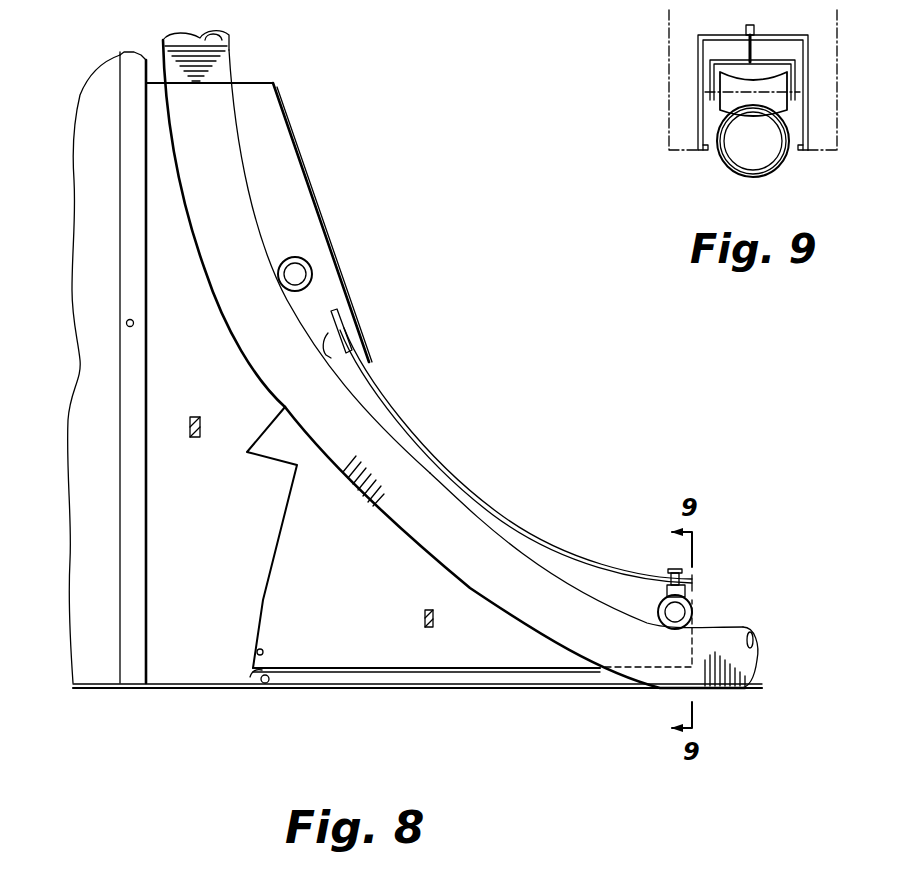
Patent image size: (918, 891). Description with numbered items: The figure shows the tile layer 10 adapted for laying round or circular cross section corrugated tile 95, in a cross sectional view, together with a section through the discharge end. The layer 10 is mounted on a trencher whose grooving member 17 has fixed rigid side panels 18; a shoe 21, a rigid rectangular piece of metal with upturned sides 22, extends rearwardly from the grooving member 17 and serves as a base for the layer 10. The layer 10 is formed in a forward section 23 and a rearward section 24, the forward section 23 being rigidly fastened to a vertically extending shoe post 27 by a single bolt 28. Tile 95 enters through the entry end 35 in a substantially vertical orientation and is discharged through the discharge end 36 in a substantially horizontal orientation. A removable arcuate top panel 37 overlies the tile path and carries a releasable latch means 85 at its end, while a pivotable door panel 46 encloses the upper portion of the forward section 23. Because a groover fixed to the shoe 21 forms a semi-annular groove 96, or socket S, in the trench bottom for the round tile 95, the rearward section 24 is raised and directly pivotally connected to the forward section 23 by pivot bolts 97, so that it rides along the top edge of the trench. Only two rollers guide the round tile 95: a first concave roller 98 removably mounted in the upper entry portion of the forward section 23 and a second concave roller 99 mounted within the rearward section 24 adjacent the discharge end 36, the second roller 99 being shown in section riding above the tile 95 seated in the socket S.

In FIG. 8, the tile layer 10 is at (452, 326).
In FIG. 8, the grooving member 17 is at (83, 152).
In FIG. 8, the side panels 18 is at (82, 373).
In FIG. 8, the shoe 21 is at (82, 692).
In FIG. 8, the upturned sides 22 is at (240, 681).
In FIG. 8, the forward section 23 is at (183, 624).
In FIG. 8, the rearward section 24 is at (383, 646).
In FIG. 8, the shoe post 27 is at (139, 371).
In FIG. 8, the bolt 28 is at (134, 323).
In FIG. 8, the entry end 35 is at (291, 72).
In FIG. 8, the discharge end 36 is at (756, 567).
In FIG. 8, the top panel 37 is at (494, 515).
In FIG. 8, the door panel 46 is at (328, 224).
In FIG. 8, the latch means 85 is at (343, 321).
In FIG. 8, the round corrugated tile 95 is at (733, 655).
In FIG. 9, the round corrugated tile 95 is at (750, 158).
In FIG. 9, the semi-annular groove 96 is at (783, 162).
In FIG. 8, the pivot bolts 97 is at (264, 651).
In FIG. 8, the first concave roller 98 is at (313, 270).
In FIG. 8, the second concave roller 99 is at (686, 613).
In FIG. 9, the second concave roller 99 is at (784, 82).
In FIG. 9, the socket S is at (722, 174).